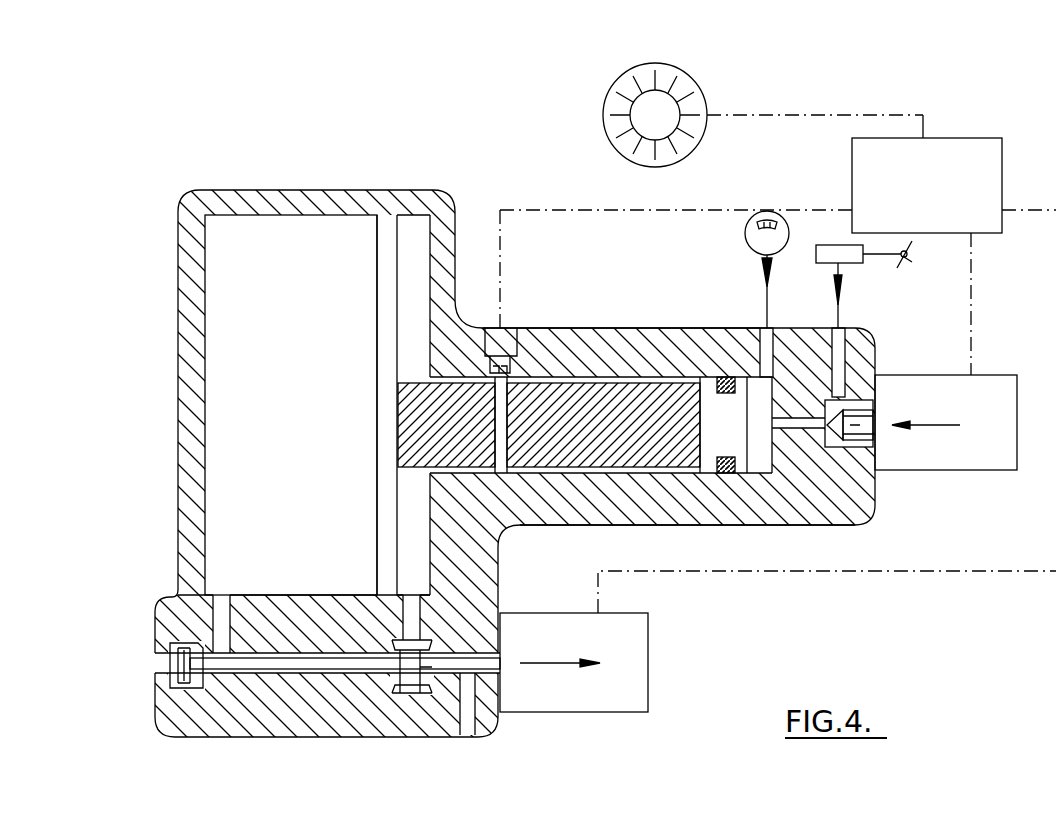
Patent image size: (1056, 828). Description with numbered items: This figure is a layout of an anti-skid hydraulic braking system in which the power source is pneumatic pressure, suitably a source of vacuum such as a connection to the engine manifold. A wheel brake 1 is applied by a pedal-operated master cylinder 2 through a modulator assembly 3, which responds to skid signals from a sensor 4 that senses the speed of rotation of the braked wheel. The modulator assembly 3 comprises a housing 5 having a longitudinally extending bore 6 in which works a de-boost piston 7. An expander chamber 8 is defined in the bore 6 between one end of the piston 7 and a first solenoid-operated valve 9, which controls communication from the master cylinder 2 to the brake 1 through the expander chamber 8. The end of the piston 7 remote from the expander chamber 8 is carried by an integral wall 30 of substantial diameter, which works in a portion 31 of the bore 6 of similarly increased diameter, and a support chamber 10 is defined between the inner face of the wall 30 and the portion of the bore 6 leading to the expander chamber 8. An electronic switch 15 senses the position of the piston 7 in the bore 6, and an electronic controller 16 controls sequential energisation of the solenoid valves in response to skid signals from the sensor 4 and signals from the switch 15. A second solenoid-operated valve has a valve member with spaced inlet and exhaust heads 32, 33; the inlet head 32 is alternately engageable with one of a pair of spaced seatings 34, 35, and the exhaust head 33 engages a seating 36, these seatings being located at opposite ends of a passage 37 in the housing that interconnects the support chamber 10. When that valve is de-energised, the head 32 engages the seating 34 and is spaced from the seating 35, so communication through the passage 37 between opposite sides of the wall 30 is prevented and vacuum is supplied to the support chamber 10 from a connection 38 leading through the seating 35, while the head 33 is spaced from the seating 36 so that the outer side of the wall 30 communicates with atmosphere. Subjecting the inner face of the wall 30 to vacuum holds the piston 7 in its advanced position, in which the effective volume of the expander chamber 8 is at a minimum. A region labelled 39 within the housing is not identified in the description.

The wheel brake 1 is at (763, 243).
The pedal-operated master cylinder 2 is at (836, 251).
The modulator assembly 3 is at (612, 365).
The sensor 4 is at (625, 90).
The housing 5 is at (697, 505).
The bore 6 is at (670, 375).
The de-boost piston 7 is at (568, 410).
The expander chamber 8 is at (765, 470).
The first solenoid-operated valve 9 is at (940, 445).
The support chamber 10 is at (412, 228).
The electronic switch 15 is at (503, 363).
The electronic controller 16 is at (943, 162).
The integral wall 30 is at (389, 225).
The portion of the bore 31 is at (243, 215).
The inlet head 32 is at (408, 690).
The exhaust head 33 is at (190, 690).
The seating 34 is at (398, 682).
The seating 35 is at (462, 727).
The seating 36 is at (242, 690).
The passage 37 is at (312, 680).
The connection 38 is at (483, 737).
The chamber 39 is at (228, 404).